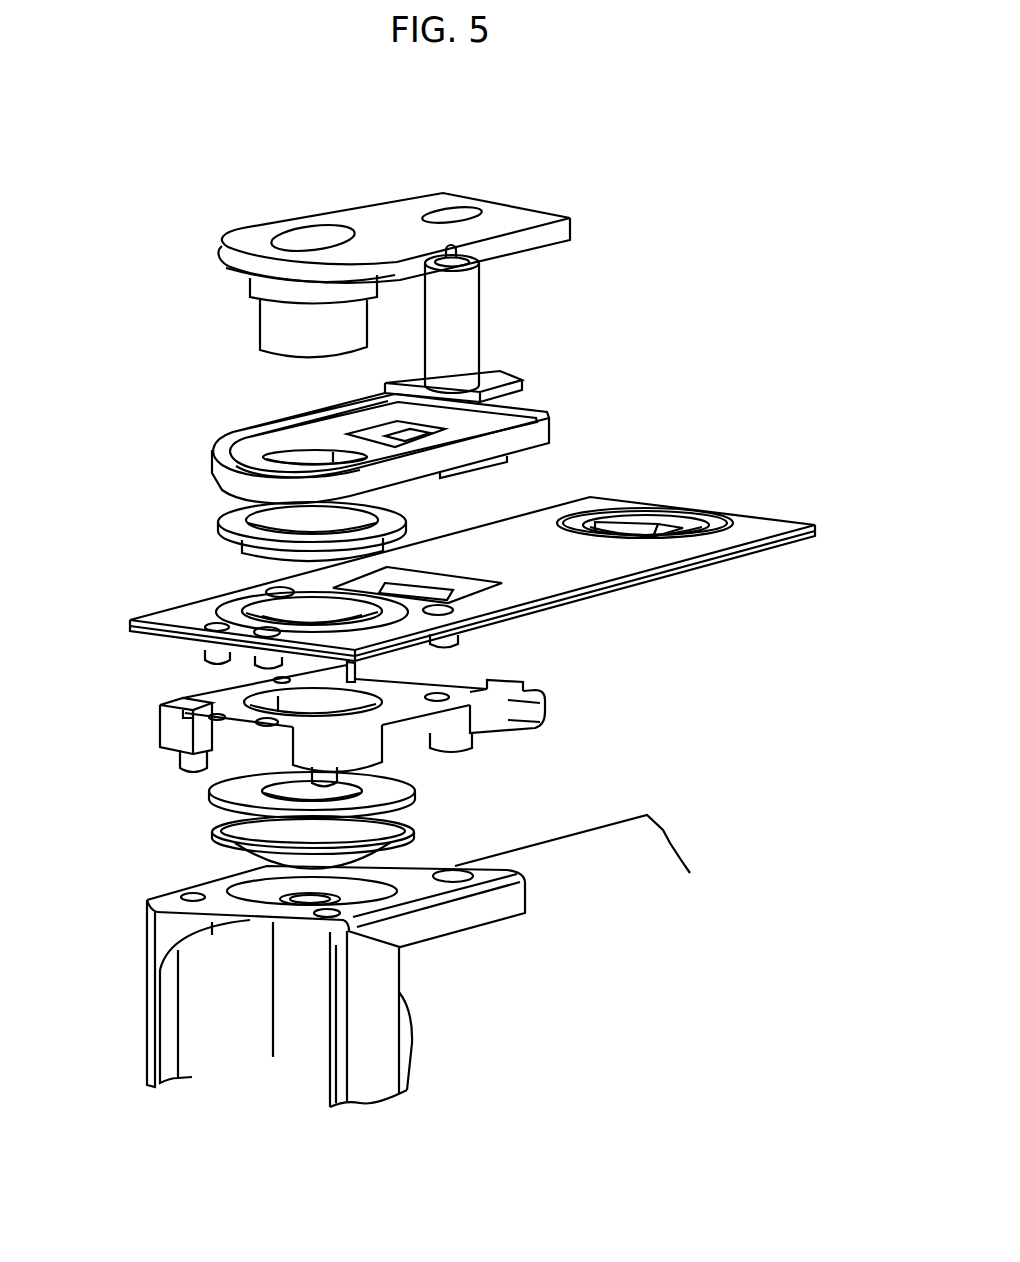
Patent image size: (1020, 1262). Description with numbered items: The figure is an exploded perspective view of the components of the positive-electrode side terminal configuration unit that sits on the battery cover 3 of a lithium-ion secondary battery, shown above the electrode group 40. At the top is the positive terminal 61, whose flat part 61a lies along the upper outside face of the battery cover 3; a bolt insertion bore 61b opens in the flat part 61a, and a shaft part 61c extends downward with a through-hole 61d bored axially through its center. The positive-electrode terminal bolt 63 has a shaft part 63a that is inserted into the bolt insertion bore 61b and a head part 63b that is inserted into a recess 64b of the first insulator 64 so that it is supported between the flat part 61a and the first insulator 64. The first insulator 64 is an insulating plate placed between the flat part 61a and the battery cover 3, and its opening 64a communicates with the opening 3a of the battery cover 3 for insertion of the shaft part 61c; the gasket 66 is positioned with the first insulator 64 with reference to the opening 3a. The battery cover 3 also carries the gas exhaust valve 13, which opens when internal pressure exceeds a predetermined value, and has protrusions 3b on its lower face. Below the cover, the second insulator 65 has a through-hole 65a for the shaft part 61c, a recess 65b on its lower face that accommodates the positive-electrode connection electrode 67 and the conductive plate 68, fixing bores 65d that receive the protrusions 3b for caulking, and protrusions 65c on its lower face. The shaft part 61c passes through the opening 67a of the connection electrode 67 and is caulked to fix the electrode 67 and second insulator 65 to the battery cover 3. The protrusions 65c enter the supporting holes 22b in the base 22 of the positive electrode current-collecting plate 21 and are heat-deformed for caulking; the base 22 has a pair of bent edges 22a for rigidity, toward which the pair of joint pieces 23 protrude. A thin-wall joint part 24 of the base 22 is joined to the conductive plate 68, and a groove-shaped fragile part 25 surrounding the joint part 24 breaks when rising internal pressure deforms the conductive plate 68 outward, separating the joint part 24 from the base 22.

The battery cover 3 is at (446, 550).
The opening 3a is at (270, 608).
The protrusions 3b is at (215, 655).
The gas exhaust valve 13 is at (690, 520).
The positive electrode current-collecting plate 21 is at (328, 953).
The base 22 is at (328, 908).
The edges 22a is at (410, 945).
The supporting holes 22b is at (188, 897).
The joint pieces 23 is at (150, 1053).
The joint part 24 is at (227, 879).
The fragile part 25 is at (500, 920).
The electrode group 40 is at (618, 823).
The positive terminal 61 is at (363, 237).
The flat part 61a is at (410, 210).
The bolt insertion bore 61b is at (452, 213).
The shaft part 61c is at (265, 328).
The through-hole 61d is at (313, 236).
The positive-electrode terminal bolt 63 is at (514, 323).
The shaft part 63a is at (468, 320).
The head part 63b is at (493, 384).
The first insulator 64 is at (407, 438).
The opening 64a is at (287, 448).
The recess 64b is at (386, 433).
The second insulator 65 is at (342, 719).
The through-hole 65a is at (363, 694).
The recess 65b is at (500, 712).
The protrusions 65c is at (538, 755).
The fixing bores 65d is at (188, 714).
The gasket 66 is at (222, 531).
The positive-electrode connection electrode 67 is at (267, 780).
The opening 67a is at (292, 771).
The conductive plate 68 is at (215, 833).